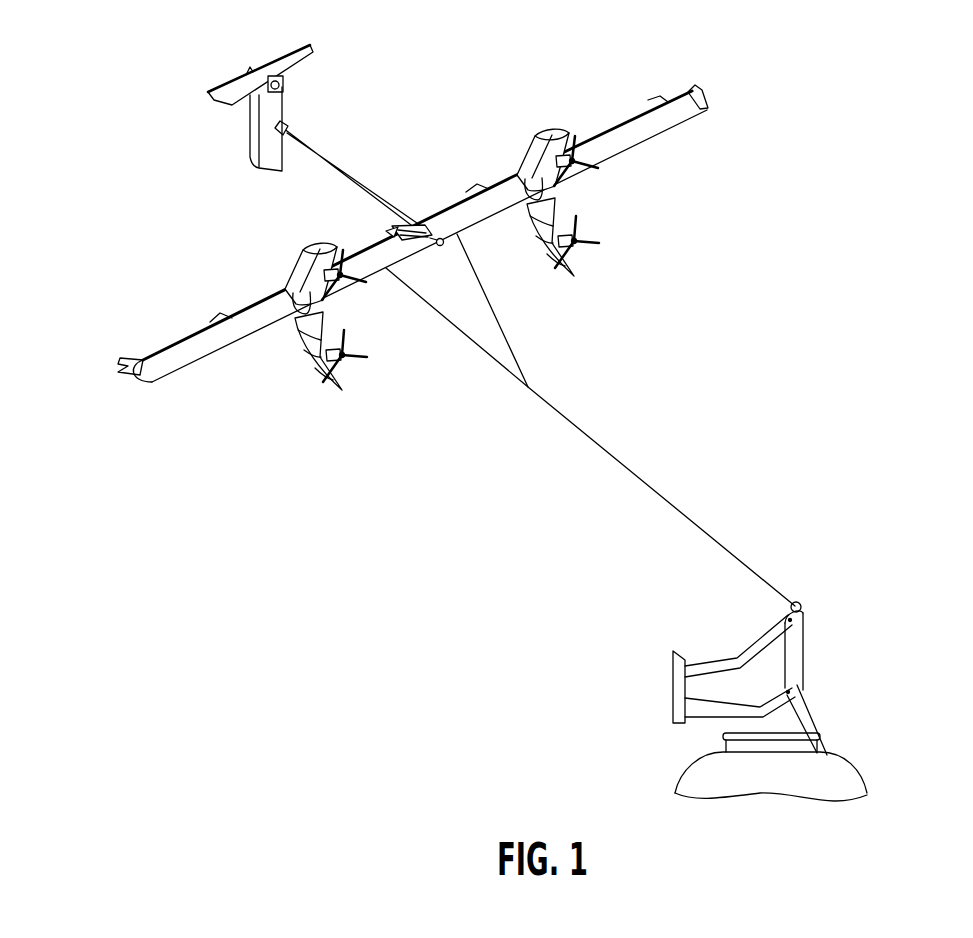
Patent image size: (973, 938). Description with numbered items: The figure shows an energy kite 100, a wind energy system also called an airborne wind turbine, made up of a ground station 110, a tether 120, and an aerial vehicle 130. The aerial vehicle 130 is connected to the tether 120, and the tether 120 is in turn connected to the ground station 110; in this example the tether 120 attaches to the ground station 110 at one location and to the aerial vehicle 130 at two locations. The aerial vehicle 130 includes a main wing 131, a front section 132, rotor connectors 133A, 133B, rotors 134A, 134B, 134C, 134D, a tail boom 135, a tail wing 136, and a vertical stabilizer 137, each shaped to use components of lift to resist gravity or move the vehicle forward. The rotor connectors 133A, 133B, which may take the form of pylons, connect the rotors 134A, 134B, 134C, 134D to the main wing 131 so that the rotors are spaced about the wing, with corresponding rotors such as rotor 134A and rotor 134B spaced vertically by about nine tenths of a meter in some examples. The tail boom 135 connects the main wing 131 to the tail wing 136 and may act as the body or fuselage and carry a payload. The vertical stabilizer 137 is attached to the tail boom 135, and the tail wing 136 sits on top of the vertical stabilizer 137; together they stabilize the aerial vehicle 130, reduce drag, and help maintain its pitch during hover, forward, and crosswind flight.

The energy kite 100 is at (930, 127).
The ground station 110 is at (793, 658).
The tether 120 is at (673, 507).
The aerial vehicle 130 is at (784, 78).
The main wing 131 is at (475, 213).
The front section 132 is at (440, 248).
The rotor connector 133A is at (530, 138).
The rotor connector 133B is at (297, 255).
The rotor 134A is at (577, 175).
The rotor 134B is at (578, 252).
The rotor 134C is at (343, 285).
The rotor 134D is at (343, 363).
The tail boom 135 is at (337, 165).
The tail wing 136 is at (315, 49).
The vertical stabilizer 137 is at (272, 163).